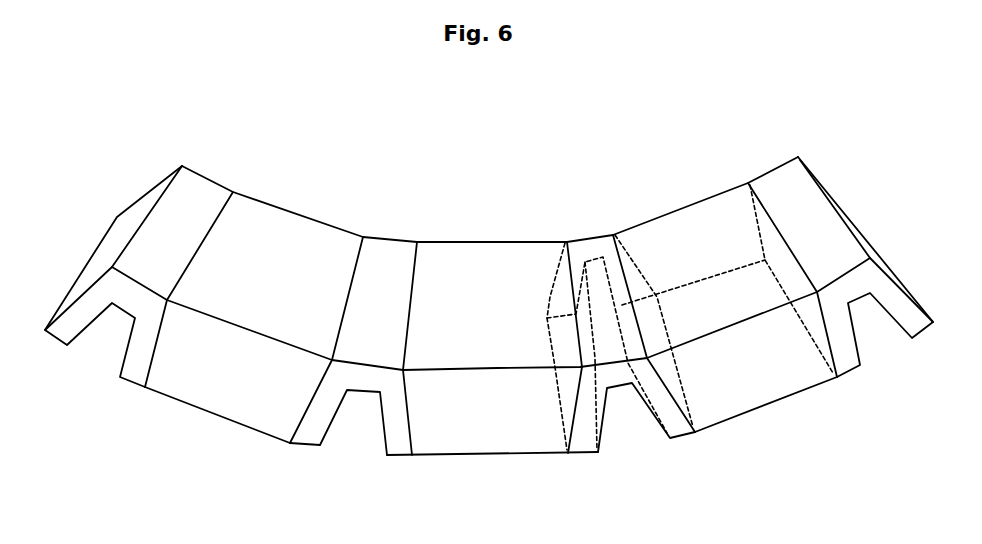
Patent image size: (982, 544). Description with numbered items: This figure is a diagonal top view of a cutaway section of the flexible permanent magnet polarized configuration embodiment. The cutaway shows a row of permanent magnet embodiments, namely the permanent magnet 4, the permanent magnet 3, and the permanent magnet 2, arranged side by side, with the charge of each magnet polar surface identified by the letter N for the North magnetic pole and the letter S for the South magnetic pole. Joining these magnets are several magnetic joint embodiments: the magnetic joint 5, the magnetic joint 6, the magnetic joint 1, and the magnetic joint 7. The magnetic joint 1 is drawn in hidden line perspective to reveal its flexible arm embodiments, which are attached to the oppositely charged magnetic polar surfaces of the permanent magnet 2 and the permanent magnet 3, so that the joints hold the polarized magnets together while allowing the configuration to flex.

The magnetic joint flexible arm 1 is at (585, 445).
The permanent magnet 2 is at (692, 215).
The permanent magnet 3 is at (487, 250).
The permanent magnet 4 is at (293, 217).
The magnetic joint 5 is at (133, 375).
The magnetic joint 6 is at (307, 433).
The magnetic joint 7 is at (845, 363).